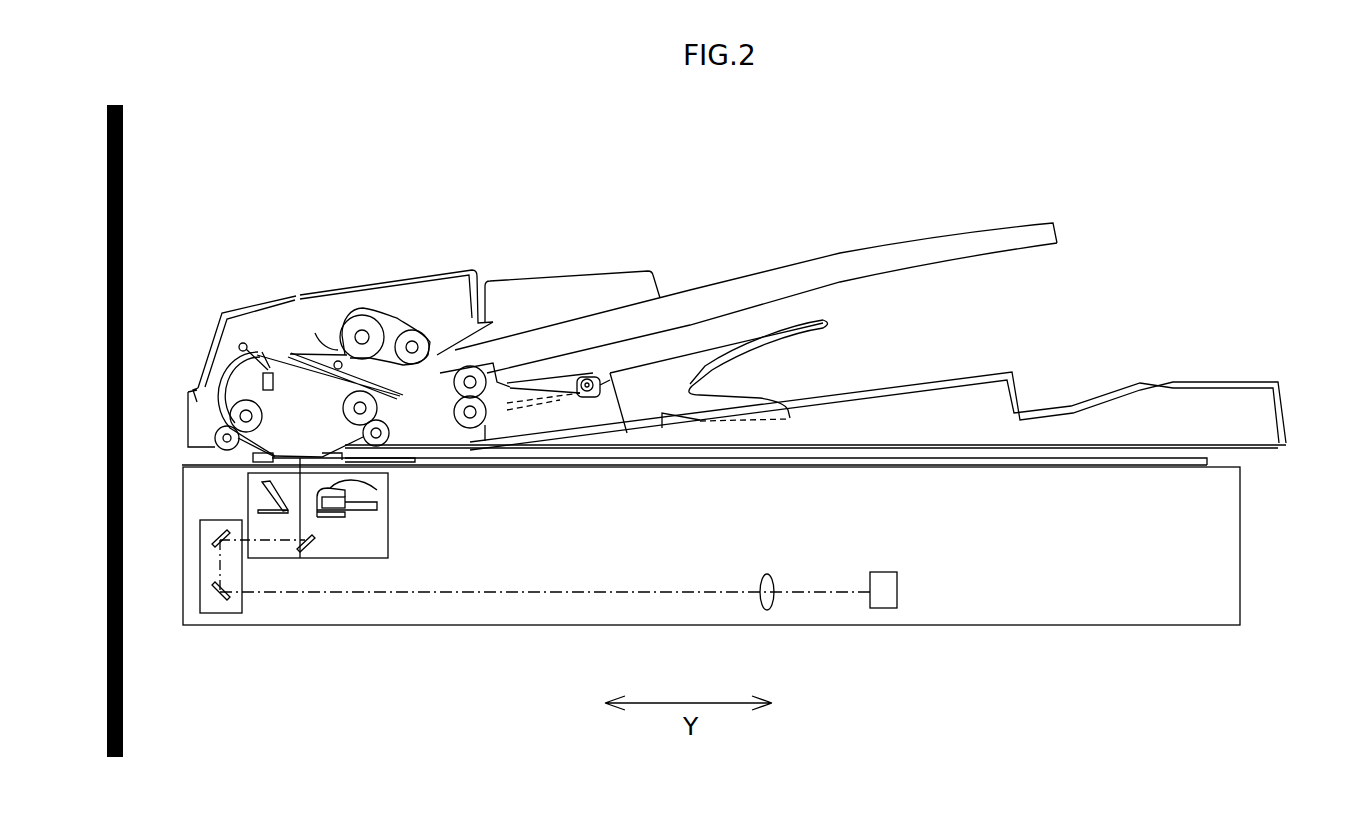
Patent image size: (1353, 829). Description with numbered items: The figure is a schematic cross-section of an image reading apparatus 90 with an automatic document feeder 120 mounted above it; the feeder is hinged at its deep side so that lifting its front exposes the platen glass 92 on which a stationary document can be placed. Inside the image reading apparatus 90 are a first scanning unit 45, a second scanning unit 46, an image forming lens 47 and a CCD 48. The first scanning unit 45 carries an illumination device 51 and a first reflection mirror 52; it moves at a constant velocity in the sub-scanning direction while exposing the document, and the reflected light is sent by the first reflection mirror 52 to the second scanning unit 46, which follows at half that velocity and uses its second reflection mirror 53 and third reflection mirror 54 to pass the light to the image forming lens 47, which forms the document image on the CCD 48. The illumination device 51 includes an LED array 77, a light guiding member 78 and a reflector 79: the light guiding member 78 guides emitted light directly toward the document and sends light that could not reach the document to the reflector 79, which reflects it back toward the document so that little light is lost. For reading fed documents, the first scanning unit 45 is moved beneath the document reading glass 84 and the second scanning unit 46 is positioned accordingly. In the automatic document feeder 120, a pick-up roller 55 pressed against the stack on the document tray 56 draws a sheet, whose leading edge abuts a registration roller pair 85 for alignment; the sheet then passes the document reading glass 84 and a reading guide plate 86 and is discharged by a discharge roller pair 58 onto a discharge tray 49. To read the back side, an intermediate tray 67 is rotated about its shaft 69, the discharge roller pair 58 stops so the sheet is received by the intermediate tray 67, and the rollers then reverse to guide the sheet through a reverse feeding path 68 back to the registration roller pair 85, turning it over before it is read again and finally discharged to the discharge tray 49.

The automatic document feeder 120 is at (1013, 306).
The document tray 56 is at (820, 258).
The discharge tray 49 is at (908, 388).
The platen glass 92 is at (990, 466).
The image reading apparatus 90 is at (1240, 533).
The reverse feeding path 68 is at (347, 356).
The pick-up roller 55 is at (413, 328).
The reading guide plate 86 is at (308, 452).
The registration roller pair 85 is at (223, 426).
The document reading glass 84 is at (288, 455).
The discharge roller pair 58 is at (473, 367).
The intermediate tray 67 is at (547, 382).
The shaft 69 is at (587, 377).
The first scanning unit 45 is at (388, 543).
The reflector 79 is at (260, 487).
The illumination device 51 is at (378, 484).
The light guiding member 78 is at (338, 484).
The LED array 77 is at (334, 508).
The second scanning unit 46 is at (220, 616).
The second reflection mirror 53 is at (212, 537).
The third reflection mirror 54 is at (212, 603).
The first reflection mirror 52 is at (305, 553).
The image forming lens 47 is at (758, 606).
The CCD 48 is at (883, 610).